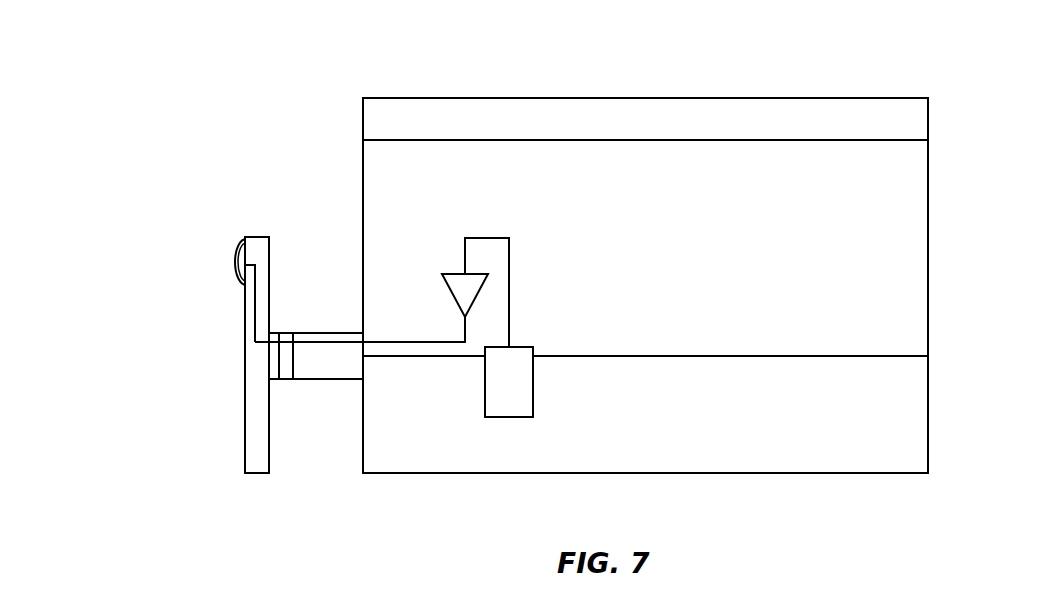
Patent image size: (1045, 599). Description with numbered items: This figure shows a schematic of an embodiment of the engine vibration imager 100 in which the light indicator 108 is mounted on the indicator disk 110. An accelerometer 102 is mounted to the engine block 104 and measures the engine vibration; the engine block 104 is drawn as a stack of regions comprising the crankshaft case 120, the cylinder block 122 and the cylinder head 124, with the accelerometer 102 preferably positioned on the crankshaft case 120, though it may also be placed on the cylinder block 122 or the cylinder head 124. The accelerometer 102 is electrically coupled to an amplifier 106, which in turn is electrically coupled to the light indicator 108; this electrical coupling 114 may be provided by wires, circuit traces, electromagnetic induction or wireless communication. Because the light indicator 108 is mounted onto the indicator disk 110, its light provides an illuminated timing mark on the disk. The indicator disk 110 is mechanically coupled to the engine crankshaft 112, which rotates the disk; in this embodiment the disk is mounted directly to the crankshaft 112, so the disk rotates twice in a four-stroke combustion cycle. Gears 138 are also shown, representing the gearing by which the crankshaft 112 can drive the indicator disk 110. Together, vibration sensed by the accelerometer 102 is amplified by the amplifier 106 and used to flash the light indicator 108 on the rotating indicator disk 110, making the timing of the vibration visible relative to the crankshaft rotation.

The engine vibration imager 100 is at (197, 78).
The accelerometer 102 is at (533, 380).
The engine block 104 is at (810, 62).
The amplifier 106 is at (453, 283).
The light indicator 108 is at (237, 262).
The indicator disk 110 is at (258, 398).
The crankshaft 112 is at (307, 333).
The electrical coupling 114 is at (340, 333).
The crankshaft case 120 is at (874, 422).
The cylinder block 122 is at (645, 323).
The cylinder head 124 is at (645, 123).
The gears 138 is at (293, 379).